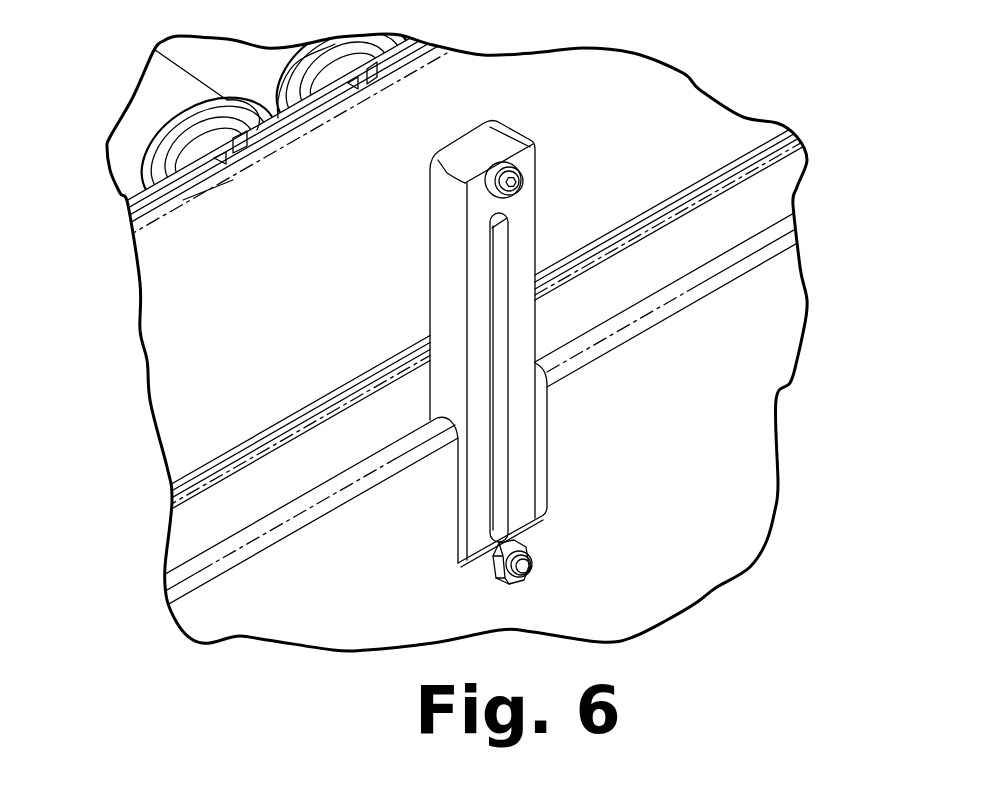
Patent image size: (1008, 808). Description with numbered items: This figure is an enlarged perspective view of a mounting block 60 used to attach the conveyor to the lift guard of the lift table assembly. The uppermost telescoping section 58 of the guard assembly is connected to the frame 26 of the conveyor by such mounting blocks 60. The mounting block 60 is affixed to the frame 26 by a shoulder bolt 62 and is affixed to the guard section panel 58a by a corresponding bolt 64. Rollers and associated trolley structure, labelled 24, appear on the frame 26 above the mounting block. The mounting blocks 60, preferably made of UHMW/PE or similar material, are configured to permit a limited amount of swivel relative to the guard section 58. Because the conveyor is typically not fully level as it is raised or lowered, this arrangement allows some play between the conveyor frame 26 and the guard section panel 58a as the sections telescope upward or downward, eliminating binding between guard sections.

The roller assembly 24 is at (150, 140).
The frame 26 is at (173, 267).
The telescoping section 58 is at (785, 297).
The guard section panel 58a is at (733, 373).
The mounting block 60 is at (492, 144).
The shoulder bolt 62 is at (517, 176).
The bolt 64 is at (530, 556).